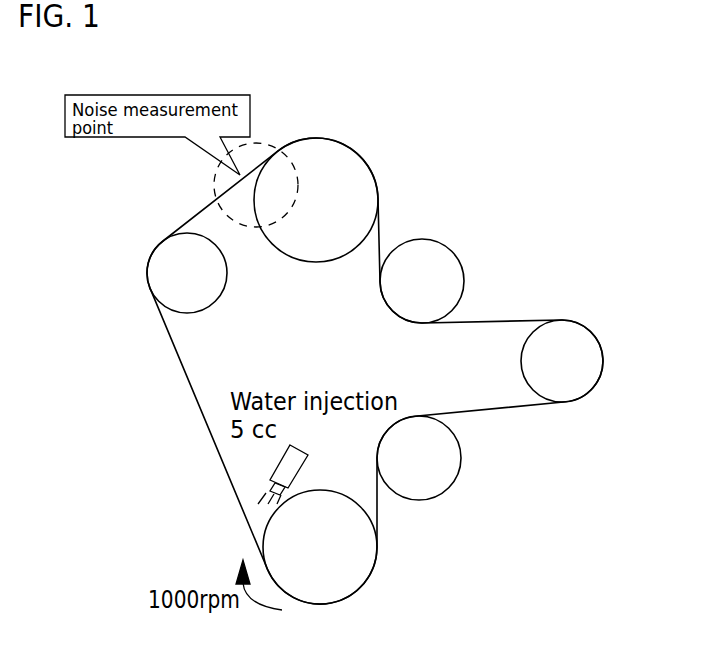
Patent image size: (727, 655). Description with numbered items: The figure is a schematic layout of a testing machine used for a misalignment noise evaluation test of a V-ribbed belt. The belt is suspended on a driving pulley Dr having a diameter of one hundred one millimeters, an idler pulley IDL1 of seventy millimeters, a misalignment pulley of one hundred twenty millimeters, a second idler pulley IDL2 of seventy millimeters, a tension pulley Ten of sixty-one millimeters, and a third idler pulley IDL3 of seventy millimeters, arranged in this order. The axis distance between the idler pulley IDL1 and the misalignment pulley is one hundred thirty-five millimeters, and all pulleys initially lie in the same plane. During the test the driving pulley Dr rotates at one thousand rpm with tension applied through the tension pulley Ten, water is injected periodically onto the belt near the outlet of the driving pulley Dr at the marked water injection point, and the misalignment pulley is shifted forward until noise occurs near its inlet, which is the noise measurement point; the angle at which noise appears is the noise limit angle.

The idler pulley IDL1 is at (241, 296).
The idler pulley IDL2 is at (472, 261).
The idler pulley IDL3 is at (462, 481).
The tension pulley Ten is at (597, 381).
The driving pulley Dr is at (339, 569).